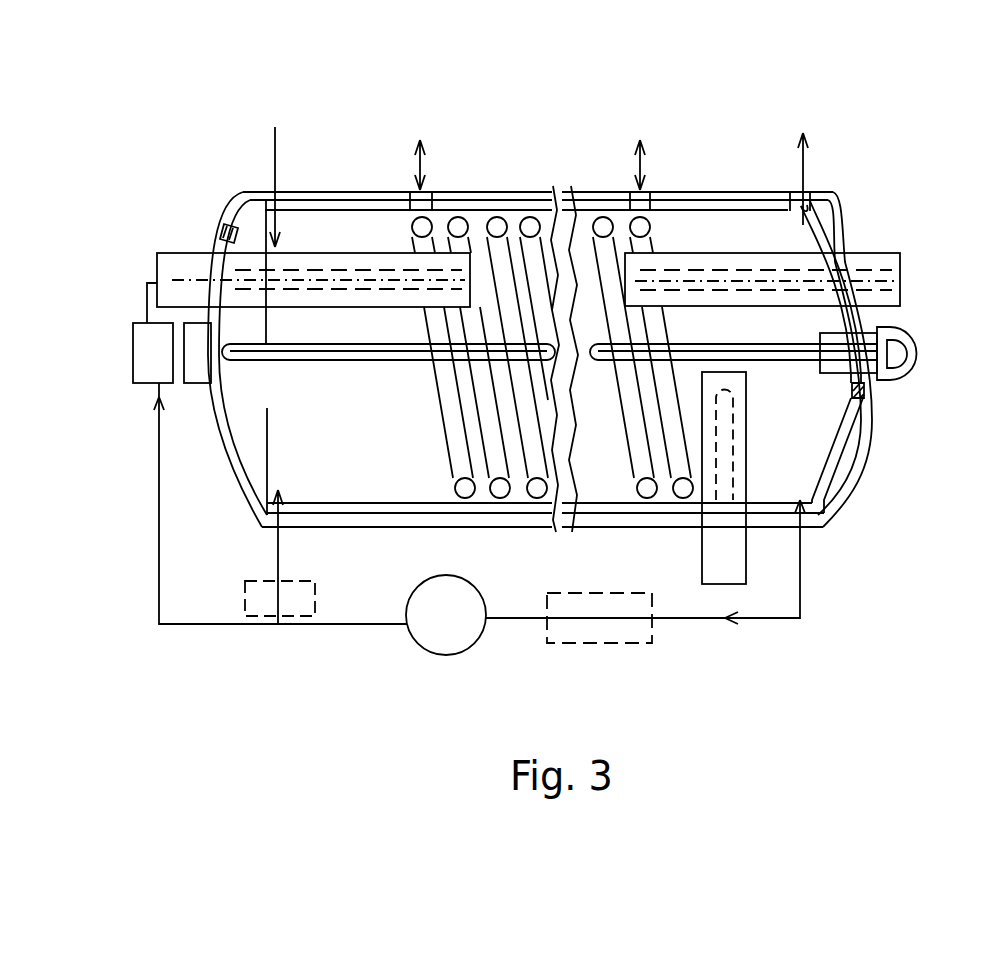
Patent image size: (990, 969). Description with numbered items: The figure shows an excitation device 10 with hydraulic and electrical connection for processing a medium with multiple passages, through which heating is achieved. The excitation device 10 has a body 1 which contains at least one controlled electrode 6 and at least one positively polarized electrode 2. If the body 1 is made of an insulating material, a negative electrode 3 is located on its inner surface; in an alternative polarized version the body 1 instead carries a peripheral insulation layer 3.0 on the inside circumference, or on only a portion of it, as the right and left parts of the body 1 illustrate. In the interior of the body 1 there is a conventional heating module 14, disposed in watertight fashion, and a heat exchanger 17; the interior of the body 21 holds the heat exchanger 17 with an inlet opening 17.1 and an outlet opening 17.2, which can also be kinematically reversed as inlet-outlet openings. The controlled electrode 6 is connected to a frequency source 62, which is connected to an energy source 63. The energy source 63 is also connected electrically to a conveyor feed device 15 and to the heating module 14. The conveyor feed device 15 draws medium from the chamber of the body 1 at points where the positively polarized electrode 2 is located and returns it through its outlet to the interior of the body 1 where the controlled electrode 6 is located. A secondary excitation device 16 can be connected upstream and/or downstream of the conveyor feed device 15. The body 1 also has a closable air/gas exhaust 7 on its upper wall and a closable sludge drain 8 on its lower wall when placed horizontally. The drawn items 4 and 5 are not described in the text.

The body 1 is at (843, 487).
The positively polarized electrode 2 is at (780, 340).
The negative electrode 3 is at (345, 447).
The peripheral insulation layer 3.0 is at (830, 503).
The top header 4 is at (285, 193).
The outlet 5 is at (790, 190).
The controlled electrode 6 is at (272, 372).
The closable air/gas exhaust 7 is at (230, 233).
The closable sludge drain 8 is at (866, 393).
The excitation device 10 is at (575, 173).
The conventional heating module 14 is at (173, 272).
The conveyor feed device 15 is at (460, 600).
The secondary excitation device 16 is at (313, 585).
The heat exchanger 17 is at (500, 253).
The inlet opening 17.1 is at (430, 193).
The outlet opening 17.2 is at (647, 193).
The body 21 is at (847, 430).
The frequency source 62 is at (202, 373).
The energy source 63 is at (159, 398).